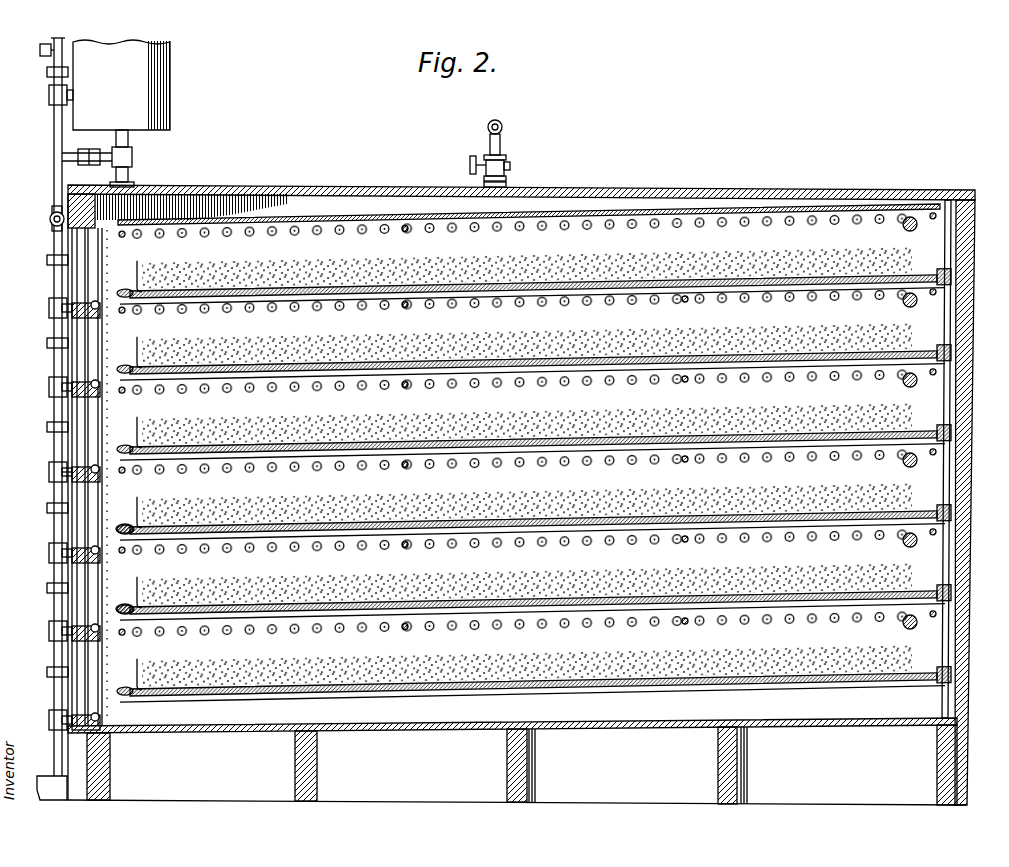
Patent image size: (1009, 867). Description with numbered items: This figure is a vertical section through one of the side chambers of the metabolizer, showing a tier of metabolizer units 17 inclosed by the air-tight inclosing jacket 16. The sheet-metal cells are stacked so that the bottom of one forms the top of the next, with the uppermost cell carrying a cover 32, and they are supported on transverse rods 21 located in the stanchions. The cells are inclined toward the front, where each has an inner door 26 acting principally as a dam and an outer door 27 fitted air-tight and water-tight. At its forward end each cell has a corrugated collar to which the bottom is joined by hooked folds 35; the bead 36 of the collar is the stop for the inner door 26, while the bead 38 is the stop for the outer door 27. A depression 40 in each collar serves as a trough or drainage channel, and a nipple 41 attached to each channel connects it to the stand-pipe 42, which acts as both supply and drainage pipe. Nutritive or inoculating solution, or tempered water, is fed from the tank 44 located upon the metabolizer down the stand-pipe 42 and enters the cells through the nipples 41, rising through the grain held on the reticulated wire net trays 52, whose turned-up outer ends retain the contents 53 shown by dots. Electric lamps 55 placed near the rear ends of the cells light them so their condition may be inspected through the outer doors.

The inclosing jacket 16 is at (725, 189).
The metabolizer units 17 is at (527, 425).
The transverse rods 21 is at (405, 308).
The inner door 26 is at (102, 265).
The outer door 27 is at (70, 247).
The cover 32 is at (529, 211).
The hooked folds 35 is at (128, 542).
The bead 36 is at (85, 465).
The bead 38 is at (80, 585).
The depression 40 is at (97, 482).
The nipple 41 is at (123, 632).
The stand-pipe 42 is at (54, 288).
The tank 44 is at (116, 113).
The trays 52 is at (655, 599).
The contents 53 is at (230, 437).
The electric lamps 55 is at (904, 303).